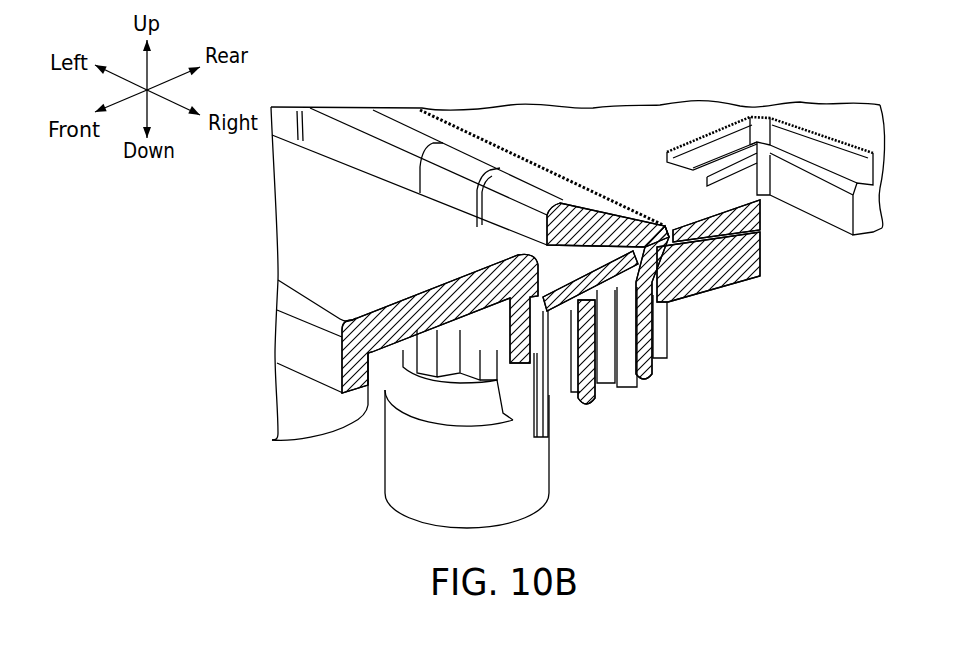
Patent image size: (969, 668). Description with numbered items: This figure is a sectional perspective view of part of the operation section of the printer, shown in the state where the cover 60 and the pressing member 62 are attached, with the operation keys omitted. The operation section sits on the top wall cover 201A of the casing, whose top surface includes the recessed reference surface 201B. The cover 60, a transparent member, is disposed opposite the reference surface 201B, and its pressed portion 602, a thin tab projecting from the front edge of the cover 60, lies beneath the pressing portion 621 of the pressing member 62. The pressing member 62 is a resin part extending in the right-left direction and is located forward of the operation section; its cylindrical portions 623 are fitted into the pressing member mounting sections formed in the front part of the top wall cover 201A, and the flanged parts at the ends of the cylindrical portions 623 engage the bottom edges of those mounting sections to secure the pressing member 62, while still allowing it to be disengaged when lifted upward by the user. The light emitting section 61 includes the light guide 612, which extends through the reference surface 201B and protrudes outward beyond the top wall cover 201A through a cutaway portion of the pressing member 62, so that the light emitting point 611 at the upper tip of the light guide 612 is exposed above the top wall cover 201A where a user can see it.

The pressing member 62 is at (367, 124).
The light emitting point 611 is at (464, 163).
The pressing portion 621 is at (663, 222).
The cover 60 is at (660, 130).
The top wall cover 201A is at (347, 242).
The reference surface 201B is at (713, 277).
The pressed portion 602 is at (683, 272).
The cylindrical portion 623 is at (593, 398).
The light emitting section 61 is at (368, 468).
The light guide 612 is at (427, 508).